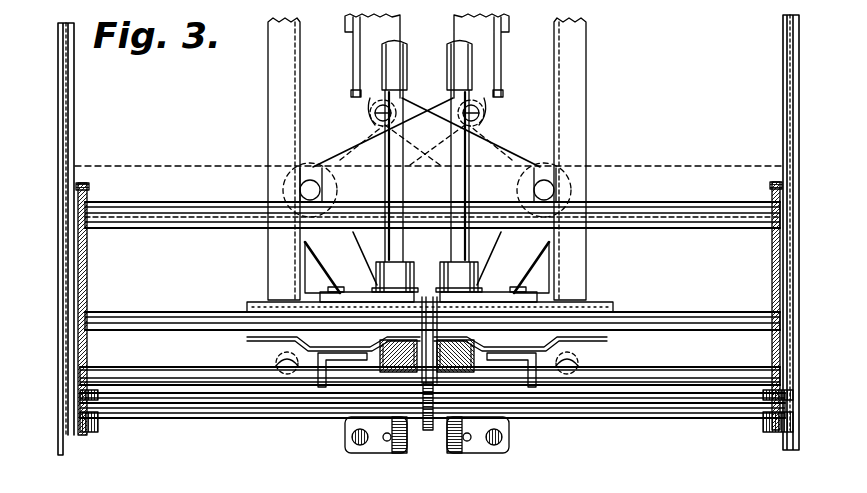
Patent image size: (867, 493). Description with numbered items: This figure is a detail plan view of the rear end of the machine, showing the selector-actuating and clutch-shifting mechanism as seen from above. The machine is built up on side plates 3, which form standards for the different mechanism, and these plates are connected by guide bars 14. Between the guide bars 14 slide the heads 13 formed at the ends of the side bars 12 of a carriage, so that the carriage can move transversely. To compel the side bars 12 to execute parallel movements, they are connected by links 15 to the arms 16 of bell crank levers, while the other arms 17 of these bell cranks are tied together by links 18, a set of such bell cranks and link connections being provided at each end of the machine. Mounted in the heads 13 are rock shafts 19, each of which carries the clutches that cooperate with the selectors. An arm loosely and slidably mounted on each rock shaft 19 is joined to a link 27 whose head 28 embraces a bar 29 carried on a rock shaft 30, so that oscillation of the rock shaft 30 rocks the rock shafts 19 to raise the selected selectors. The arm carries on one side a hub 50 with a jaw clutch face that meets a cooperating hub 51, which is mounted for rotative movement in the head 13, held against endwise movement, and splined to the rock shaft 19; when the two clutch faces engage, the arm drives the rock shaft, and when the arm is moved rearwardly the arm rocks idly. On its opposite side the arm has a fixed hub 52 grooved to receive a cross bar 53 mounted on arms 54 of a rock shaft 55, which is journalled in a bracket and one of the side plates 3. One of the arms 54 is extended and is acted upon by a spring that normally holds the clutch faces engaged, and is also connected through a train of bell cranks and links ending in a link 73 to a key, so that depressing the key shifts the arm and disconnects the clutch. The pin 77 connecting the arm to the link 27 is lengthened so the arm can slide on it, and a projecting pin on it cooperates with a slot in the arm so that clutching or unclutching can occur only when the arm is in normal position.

The side plate 3 is at (59, 98).
The link 73 is at (73, 128).
The side bar of carriage 12 is at (268, 108).
The link 18 is at (372, 61).
The rock shaft 19 is at (450, 46).
The arm of bell crank lever 17 is at (348, 152).
The rock shaft 30 is at (638, 203).
The arm of bell crank lever 16 is at (322, 258).
The guide bar 14 is at (165, 312).
The head 13 is at (258, 302).
The link 27 is at (330, 350).
The hub 51 is at (436, 330).
The link 15 is at (270, 365).
The bar 29 is at (165, 378).
The head 28 is at (290, 375).
The hub 50 is at (355, 395).
The pin 77 is at (330, 398).
The hub 52 is at (386, 441).
The arm 54 is at (85, 433).
The cross bar 53 is at (195, 405).
The rock shaft 55 is at (240, 403).